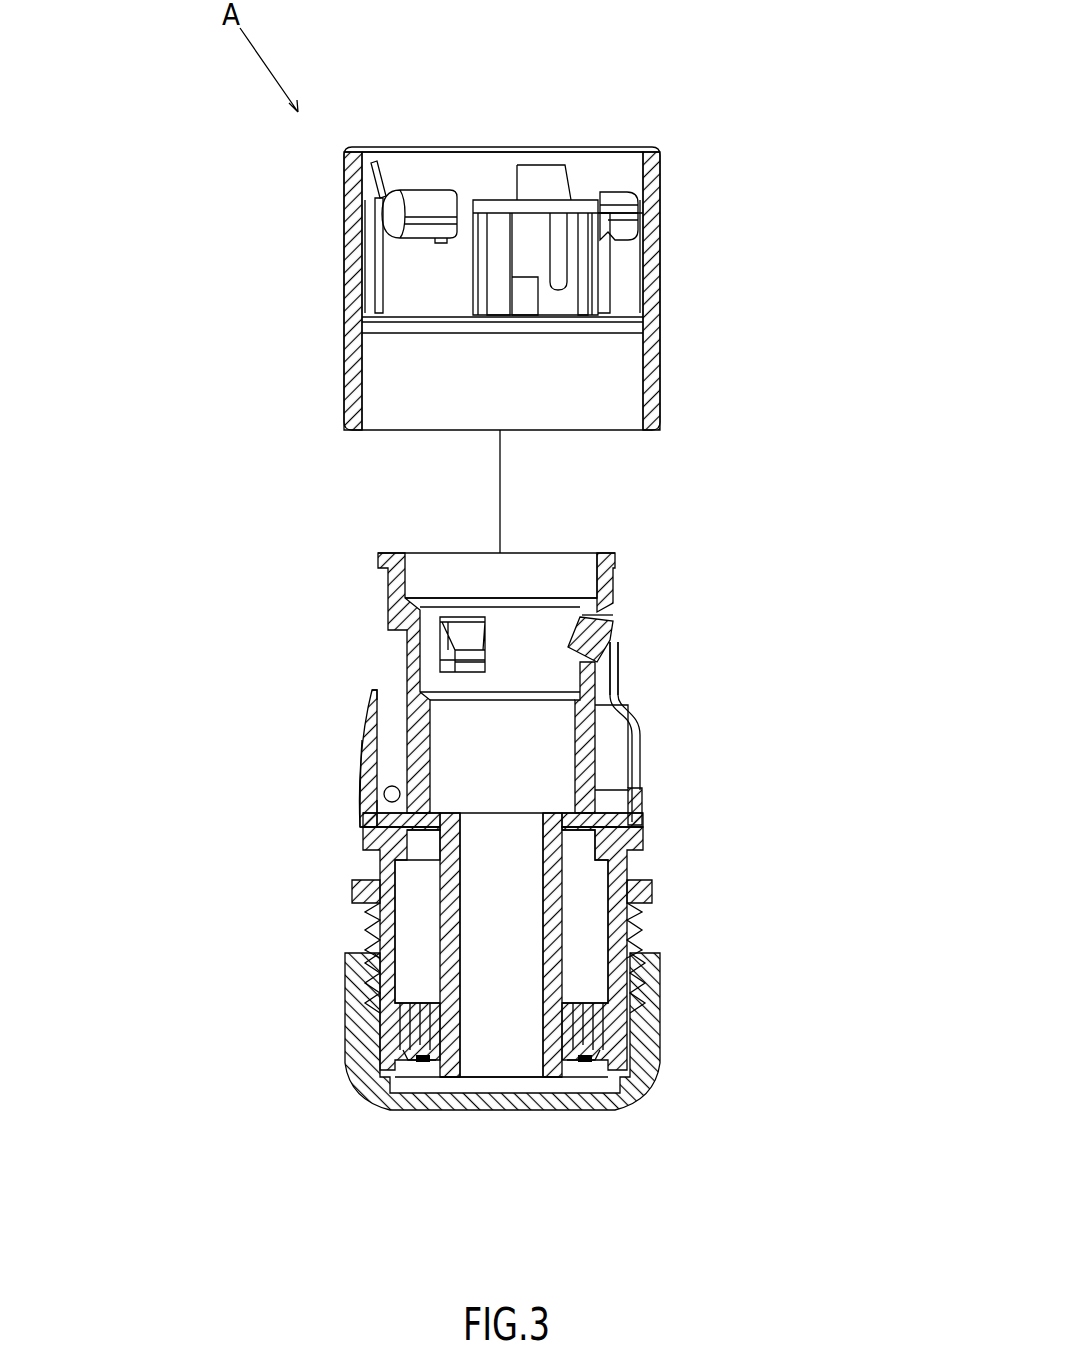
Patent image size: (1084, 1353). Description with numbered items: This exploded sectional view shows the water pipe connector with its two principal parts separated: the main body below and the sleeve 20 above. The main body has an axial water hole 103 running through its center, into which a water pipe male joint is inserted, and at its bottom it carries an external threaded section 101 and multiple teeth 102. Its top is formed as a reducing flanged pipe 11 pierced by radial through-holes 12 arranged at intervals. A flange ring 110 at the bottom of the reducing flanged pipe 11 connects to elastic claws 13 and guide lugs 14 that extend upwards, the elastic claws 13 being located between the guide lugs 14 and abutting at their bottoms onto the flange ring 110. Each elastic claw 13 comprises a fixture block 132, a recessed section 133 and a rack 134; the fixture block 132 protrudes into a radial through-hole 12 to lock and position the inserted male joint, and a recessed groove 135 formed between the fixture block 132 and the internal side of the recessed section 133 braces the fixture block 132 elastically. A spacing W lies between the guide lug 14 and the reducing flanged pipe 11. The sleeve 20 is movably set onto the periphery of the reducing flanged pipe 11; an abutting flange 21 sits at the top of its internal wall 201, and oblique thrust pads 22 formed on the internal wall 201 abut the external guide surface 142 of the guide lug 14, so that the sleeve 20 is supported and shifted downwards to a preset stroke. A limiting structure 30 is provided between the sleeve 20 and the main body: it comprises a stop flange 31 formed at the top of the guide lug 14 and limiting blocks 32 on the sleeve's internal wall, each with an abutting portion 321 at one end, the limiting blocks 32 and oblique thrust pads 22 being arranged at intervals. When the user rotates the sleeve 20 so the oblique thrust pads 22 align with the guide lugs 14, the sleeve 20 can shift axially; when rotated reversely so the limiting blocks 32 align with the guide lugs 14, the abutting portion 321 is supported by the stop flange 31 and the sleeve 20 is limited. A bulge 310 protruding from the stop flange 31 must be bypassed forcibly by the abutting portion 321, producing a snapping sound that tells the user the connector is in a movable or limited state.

The sleeve 20 is at (660, 360).
The internal wall 201 is at (590, 172).
The abutting flange 21 is at (651, 218).
The oblique thrust pad 22 is at (523, 290).
The limiting structure 30 is at (546, 221).
The limiting block 32 is at (565, 255).
The abutting portion 321 is at (567, 293).
The reducing flanged pipe 11 is at (410, 730).
The radial through-hole 12 is at (455, 617).
The axial water hole 103 is at (550, 607).
The elastic claw 13 is at (748, 612).
The fixture block 132 is at (590, 638).
The recessed section 133 is at (632, 690).
The rack 134 is at (640, 745).
The recessed groove 135 is at (603, 652).
The stop flange 31 is at (372, 690).
The bulge 310 is at (375, 690).
The guide lug 14 is at (370, 795).
The external guide surface 142 is at (365, 765).
The spacing W is at (390, 800).
The flange ring 110 is at (640, 840).
The external threaded section 101 is at (380, 935).
The teeth 102 is at (410, 1030).